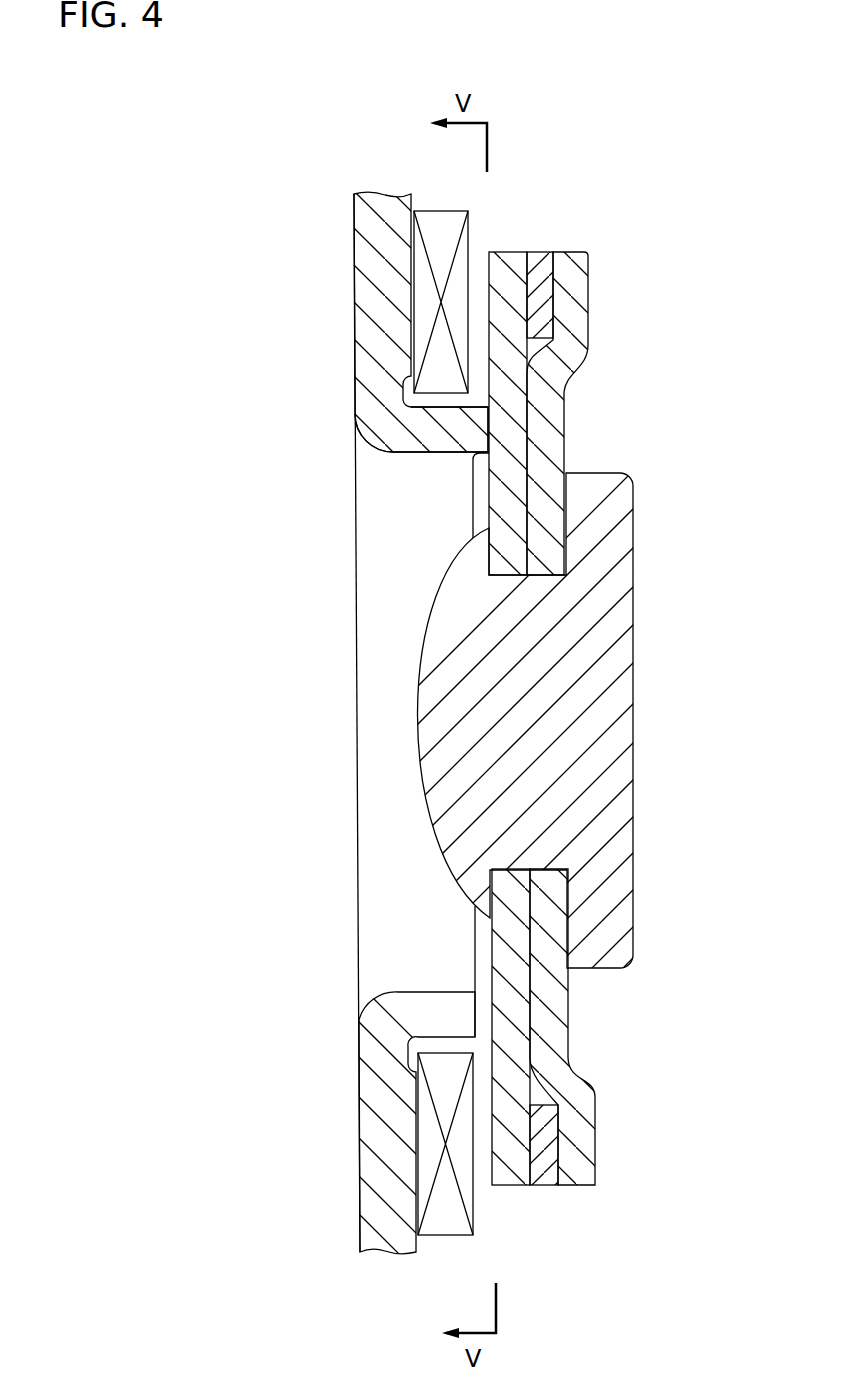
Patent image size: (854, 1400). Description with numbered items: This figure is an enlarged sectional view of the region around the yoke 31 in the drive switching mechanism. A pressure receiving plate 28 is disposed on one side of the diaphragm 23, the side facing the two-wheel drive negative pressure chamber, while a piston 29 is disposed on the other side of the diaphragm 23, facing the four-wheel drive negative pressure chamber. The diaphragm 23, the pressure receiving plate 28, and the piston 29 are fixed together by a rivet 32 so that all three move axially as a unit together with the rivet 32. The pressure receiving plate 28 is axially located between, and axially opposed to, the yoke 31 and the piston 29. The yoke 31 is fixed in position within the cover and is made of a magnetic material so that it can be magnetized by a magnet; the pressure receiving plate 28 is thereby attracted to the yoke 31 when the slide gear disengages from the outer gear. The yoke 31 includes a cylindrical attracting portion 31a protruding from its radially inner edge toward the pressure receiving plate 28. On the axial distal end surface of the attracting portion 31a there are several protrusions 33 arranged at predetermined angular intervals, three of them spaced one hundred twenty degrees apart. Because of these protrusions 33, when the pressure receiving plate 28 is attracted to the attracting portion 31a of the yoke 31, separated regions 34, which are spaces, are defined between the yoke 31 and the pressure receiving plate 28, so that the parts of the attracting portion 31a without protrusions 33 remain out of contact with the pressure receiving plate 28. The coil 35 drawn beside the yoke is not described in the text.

The diaphragm 23 is at (547, 293).
The pressure receiving plate 28 is at (510, 403).
The piston 29 is at (548, 445).
The yoke 31 is at (370, 296).
The attracting portion 31a is at (435, 430).
The rivet 32 is at (445, 708).
The protrusions 33 is at (480, 456).
The separated regions 34 is at (483, 1013).
The coil 35 is at (435, 240).